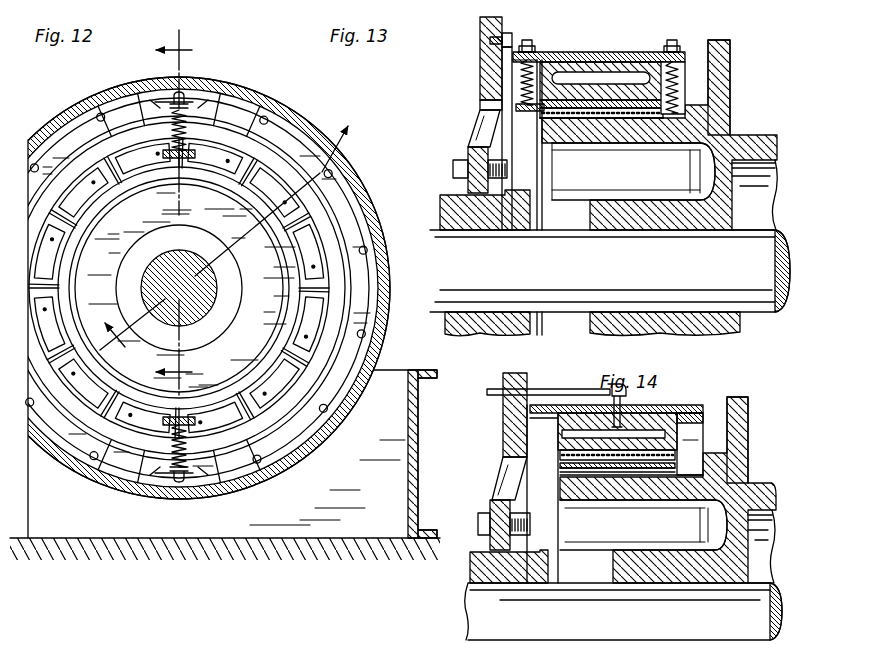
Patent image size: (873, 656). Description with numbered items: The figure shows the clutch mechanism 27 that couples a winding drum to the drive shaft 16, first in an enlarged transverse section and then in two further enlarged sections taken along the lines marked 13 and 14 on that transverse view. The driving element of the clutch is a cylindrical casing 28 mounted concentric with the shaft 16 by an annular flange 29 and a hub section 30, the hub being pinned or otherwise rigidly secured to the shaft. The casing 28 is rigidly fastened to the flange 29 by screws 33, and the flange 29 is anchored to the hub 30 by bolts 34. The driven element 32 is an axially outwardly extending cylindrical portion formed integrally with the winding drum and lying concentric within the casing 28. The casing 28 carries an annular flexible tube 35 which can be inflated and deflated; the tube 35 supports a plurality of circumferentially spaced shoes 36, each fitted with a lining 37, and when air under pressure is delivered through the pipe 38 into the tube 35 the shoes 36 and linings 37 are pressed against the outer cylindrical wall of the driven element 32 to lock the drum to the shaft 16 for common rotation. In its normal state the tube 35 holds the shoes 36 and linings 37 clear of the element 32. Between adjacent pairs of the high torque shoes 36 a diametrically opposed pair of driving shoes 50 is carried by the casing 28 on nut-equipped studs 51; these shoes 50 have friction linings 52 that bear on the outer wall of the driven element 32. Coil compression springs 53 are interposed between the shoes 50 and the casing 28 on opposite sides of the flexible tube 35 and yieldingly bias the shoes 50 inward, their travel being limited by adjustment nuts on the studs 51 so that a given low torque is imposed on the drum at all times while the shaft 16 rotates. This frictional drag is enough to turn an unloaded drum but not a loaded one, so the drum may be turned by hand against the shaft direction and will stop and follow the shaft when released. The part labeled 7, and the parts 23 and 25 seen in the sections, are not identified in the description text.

In FIG. 12, the base 7 is at (362, 503).
In FIG. 12, the section line 13— 13 is at (189, 212).
In FIG. 12, the section line 14— 14 is at (227, 229).
In FIG. 12, the drive shaft 16 is at (145, 262).
In FIG. 13, the drive shaft 16 is at (628, 275).
In FIG. 14, the drive shaft 16 is at (480, 604).
In FIG. 13, the hub flange 23 is at (732, 44).
In FIG. 14, the hub flange 23 is at (748, 400).
In FIG. 12, the rotor body 25 is at (240, 225).
In FIG. 13, the rotor body 25 is at (758, 136).
In FIG. 14, the rotor body 25 is at (758, 484).
In FIG. 12, the clutch mechanism 27 is at (300, 107).
In FIG. 13, the clutch mechanism 27 is at (476, 66).
In FIG. 14, the clutch mechanism 27 is at (500, 432).
In FIG. 12, the cylindrical casing 28 is at (383, 241).
In FIG. 13, the cylindrical casing 28 is at (590, 52).
In FIG. 14, the cylindrical casing 28 is at (655, 405).
In FIG. 13, the annular flange 29 is at (490, 84).
In FIG. 14, the annular flange 29 is at (503, 410).
In FIG. 13, the hub section 30 is at (452, 195).
In FIG. 14, the hub section 30 is at (478, 552).
In FIG. 12, the driven element 32 is at (290, 328).
In FIG. 13, the driven element 32 is at (652, 150).
In FIG. 14, the driven element 32 is at (598, 500).
In FIG. 13, the screws 33 is at (490, 40).
In FIG. 13, the bolts 34 is at (470, 160).
In FIG. 14, the bolts 34 is at (480, 515).
In FIG. 12, the annular flexible tube 35 is at (322, 210).
In FIG. 13, the annular flexible tube 35 is at (615, 108).
In FIG. 14, the annular flexible tube 35 is at (690, 413).
In FIG. 12, the shoes 36 is at (320, 253).
In FIG. 13, the shoes 36 is at (527, 197).
In FIG. 14, the shoes 36 is at (560, 470).
In FIG. 12, the lining 37 is at (313, 318).
In FIG. 13, the lining 37 is at (601, 113).
In FIG. 14, the lining 37 is at (650, 468).
In FIG. 14, the pipe or tube 38 is at (553, 389).
In FIG. 12, the driving shoes 50 is at (207, 150).
In FIG. 13, the driving shoes 50 is at (537, 112).
In FIG. 12, the nut-equipped studs 51 is at (165, 96).
In FIG. 13, the nut-equipped studs 51 is at (530, 40).
In FIG. 12, the friction linings 52 is at (211, 153).
In FIG. 13, the friction linings 52 is at (585, 120).
In FIG. 12, the coil compression springs 53 is at (140, 108).
In FIG. 13, the coil compression springs 53 is at (525, 97).